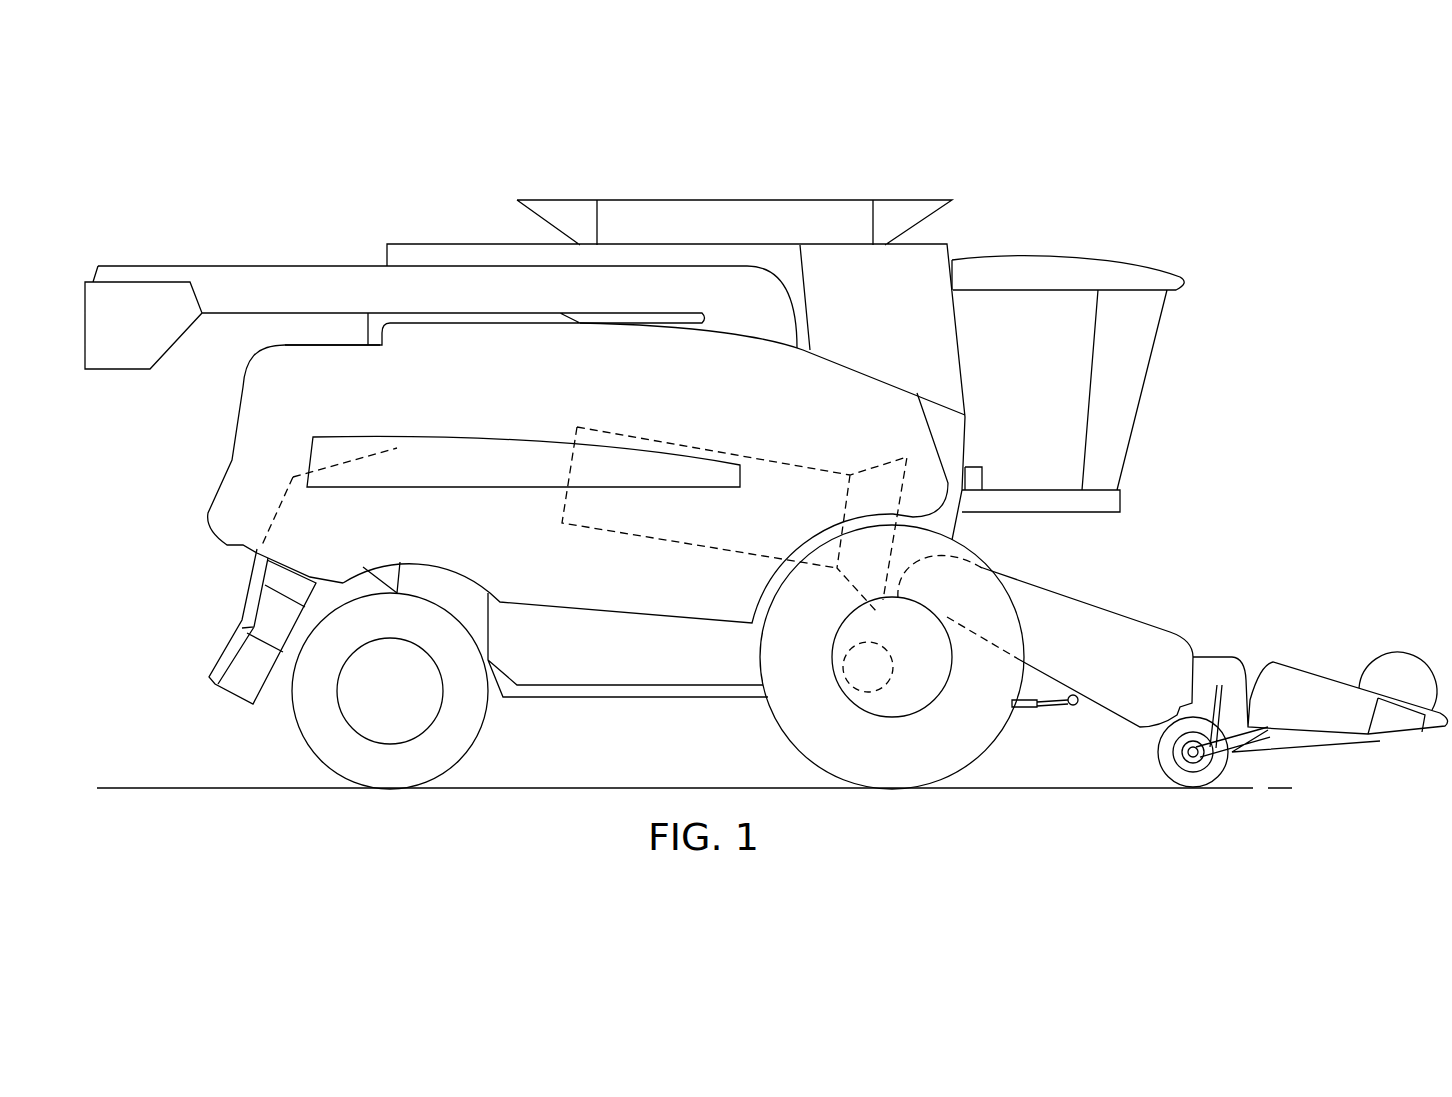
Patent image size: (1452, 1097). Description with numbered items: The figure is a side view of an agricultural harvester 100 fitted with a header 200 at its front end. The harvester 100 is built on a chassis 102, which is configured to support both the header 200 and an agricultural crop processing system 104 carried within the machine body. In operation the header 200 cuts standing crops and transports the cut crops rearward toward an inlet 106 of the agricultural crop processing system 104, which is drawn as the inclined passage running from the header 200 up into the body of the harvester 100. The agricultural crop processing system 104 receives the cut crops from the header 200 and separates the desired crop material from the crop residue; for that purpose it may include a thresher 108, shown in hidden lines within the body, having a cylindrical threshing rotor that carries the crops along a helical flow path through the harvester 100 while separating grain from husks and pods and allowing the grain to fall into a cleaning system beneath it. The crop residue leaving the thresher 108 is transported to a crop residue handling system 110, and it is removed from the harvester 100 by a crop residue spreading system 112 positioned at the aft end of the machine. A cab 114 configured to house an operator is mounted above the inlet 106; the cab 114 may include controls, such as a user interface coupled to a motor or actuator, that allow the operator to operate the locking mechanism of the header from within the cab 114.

The agricultural harvester 100 is at (1113, 199).
The chassis 102 is at (537, 705).
The agricultural crop processing system 104 is at (775, 432).
The inlet 106 is at (1017, 560).
The thresher 108 is at (782, 460).
The crop residue handling system 110 is at (383, 420).
The crop residue spreading system 112 is at (220, 643).
The cab 114 is at (1192, 377).
The header 200 is at (1340, 653).